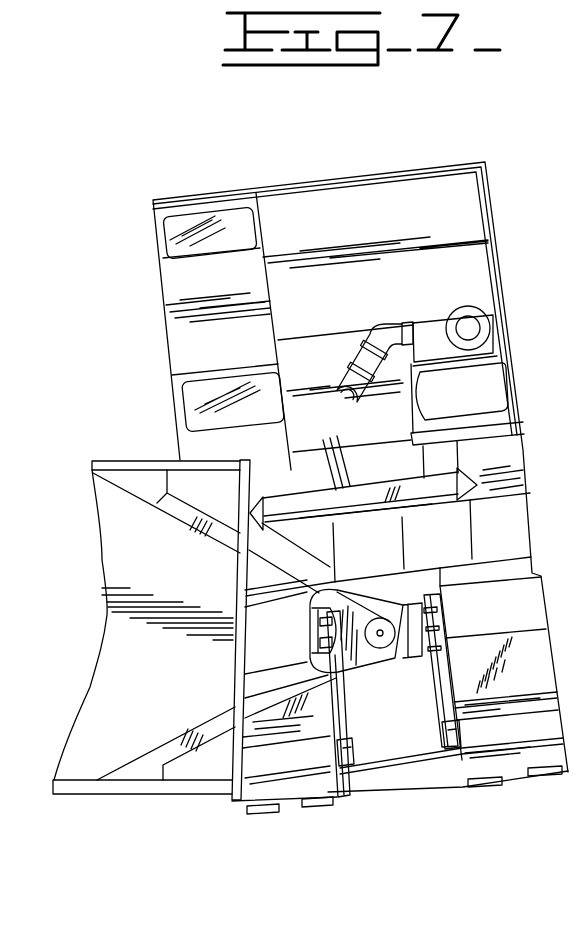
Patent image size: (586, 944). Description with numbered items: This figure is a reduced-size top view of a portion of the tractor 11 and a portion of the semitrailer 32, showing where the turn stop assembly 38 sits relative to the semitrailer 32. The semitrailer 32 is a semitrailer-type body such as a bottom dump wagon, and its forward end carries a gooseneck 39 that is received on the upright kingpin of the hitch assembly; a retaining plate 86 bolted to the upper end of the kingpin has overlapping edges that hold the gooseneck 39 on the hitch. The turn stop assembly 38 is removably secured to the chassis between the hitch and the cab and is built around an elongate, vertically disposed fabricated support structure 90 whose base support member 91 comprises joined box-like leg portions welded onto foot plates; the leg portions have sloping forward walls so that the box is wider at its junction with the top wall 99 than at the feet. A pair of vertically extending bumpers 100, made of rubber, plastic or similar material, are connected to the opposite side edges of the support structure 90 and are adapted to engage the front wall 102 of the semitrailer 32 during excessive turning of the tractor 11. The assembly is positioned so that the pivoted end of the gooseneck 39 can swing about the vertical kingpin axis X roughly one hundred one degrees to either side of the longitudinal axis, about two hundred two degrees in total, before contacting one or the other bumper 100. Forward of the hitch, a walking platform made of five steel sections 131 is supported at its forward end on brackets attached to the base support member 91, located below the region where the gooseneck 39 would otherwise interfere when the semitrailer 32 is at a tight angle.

The tractor 11 is at (471, 273).
The semitrailer 32 is at (90, 772).
The turn stop assembly 38 is at (351, 486).
The gooseneck 39 is at (284, 702).
The retaining plate 86 is at (385, 636).
The support structure 90 is at (354, 511).
The base support member 91 is at (353, 452).
The top wall 99 is at (403, 473).
The bumpers 100 is at (250, 513).
The front wall 102 is at (256, 534).
The sections 131 is at (265, 512).
The axis X is at (380, 636).